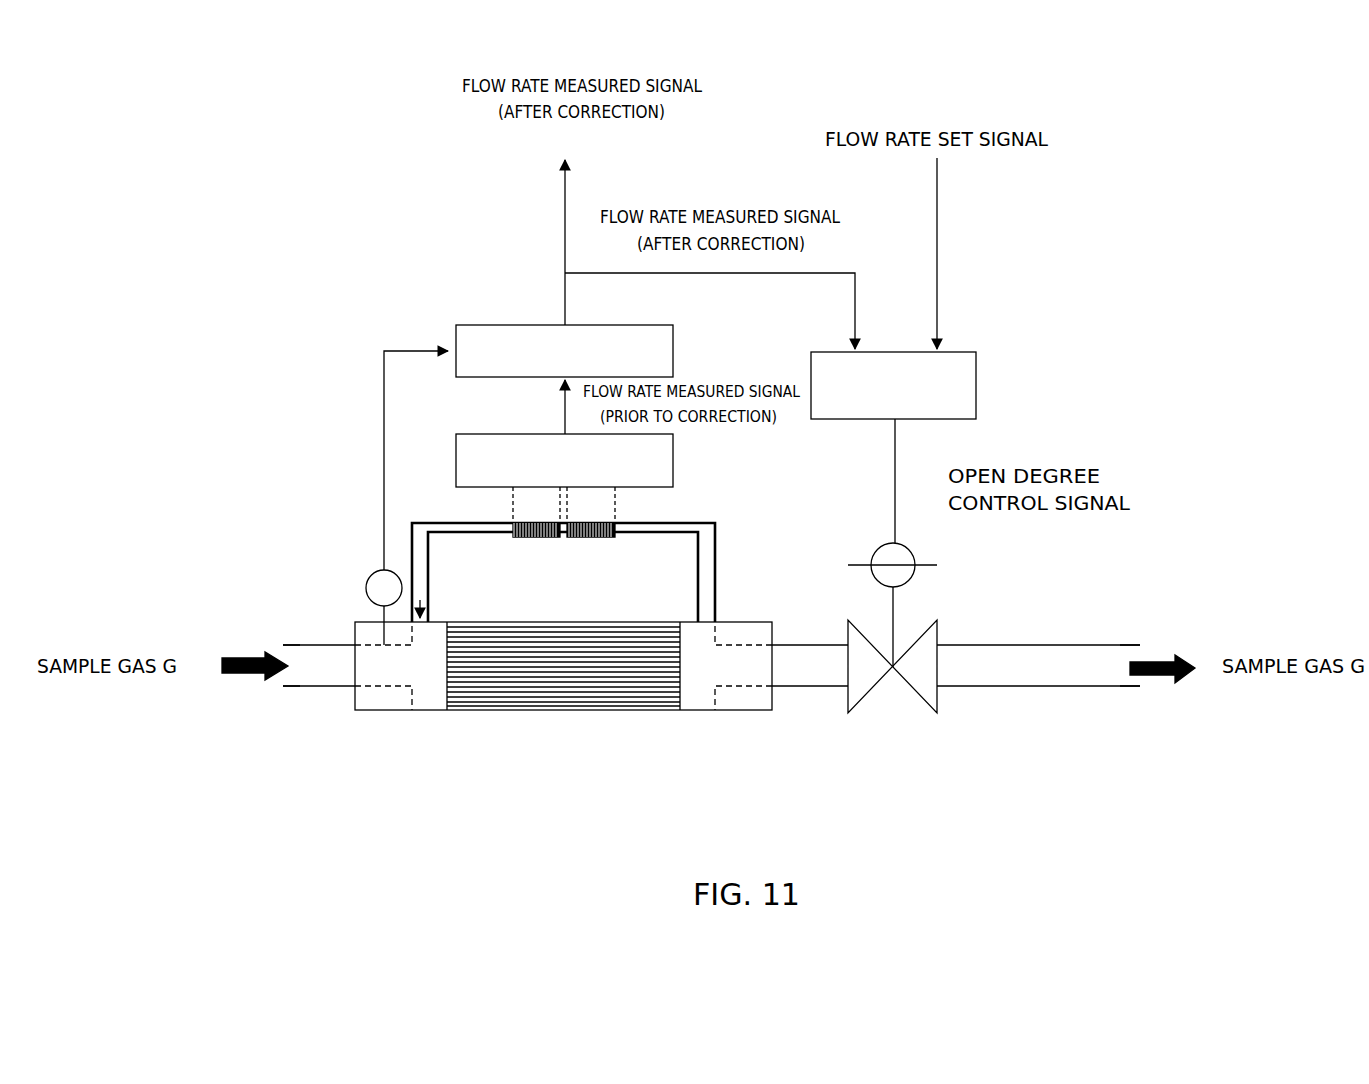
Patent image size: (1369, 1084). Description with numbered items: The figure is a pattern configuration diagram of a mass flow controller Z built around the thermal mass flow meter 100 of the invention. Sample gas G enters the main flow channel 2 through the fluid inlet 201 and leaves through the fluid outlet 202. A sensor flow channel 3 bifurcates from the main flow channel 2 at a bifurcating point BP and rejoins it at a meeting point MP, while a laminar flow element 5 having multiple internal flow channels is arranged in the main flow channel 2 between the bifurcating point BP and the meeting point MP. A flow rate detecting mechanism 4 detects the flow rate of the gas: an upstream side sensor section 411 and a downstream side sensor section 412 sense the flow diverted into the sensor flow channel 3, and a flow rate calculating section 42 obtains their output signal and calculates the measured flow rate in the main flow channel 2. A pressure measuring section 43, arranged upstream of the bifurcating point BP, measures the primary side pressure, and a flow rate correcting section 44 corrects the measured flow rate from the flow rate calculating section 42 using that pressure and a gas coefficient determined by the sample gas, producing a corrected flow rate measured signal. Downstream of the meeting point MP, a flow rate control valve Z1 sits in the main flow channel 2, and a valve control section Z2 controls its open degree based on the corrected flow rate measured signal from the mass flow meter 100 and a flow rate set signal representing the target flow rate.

The mass flow controller Z is at (403, 131).
The mass flow meter 100 is at (413, 260).
The flow rate detecting mechanism 4 is at (363, 383).
The flow rate correcting section 44 is at (475, 325).
The flow rate calculating section 42 is at (456, 462).
The valve control section Z2 is at (978, 385).
The pressure measuring section 43 is at (366, 585).
The sensor flow channel 3 is at (412, 532).
The bifurcating point BP is at (423, 600).
The meeting point MP is at (705, 615).
The upstream side sensor section 411 is at (523, 549).
The downstream side sensor section 412 is at (595, 549).
The main flow channel 2 is at (444, 657).
The laminar flow element 5 is at (575, 710).
The fluid inlet 201 is at (276, 646).
The fluid outlet 202 is at (1149, 653).
The flow rate control valve Z1 is at (917, 610).